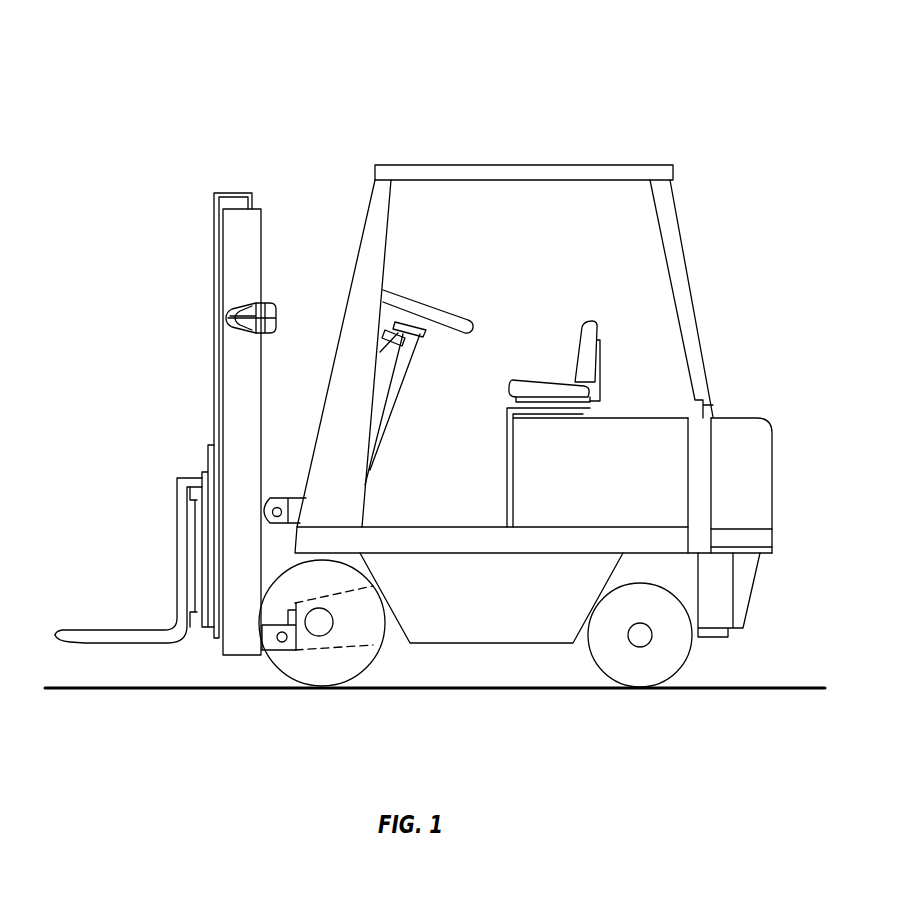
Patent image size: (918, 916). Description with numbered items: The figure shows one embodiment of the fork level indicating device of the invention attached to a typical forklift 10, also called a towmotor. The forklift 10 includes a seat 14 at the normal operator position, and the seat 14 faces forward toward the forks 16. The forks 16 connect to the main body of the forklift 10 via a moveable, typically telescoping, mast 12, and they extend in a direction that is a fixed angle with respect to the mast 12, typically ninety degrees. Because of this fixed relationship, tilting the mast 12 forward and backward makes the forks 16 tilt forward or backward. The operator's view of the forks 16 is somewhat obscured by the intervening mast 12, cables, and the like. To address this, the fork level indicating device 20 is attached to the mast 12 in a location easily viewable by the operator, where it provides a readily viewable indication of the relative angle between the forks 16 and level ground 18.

The forklift 10 is at (540, 108).
The mast 12 is at (238, 290).
The seat 14 is at (543, 382).
The forks 16 is at (128, 637).
The level ground 18 is at (765, 688).
The fork level indicating device 20 is at (292, 295).